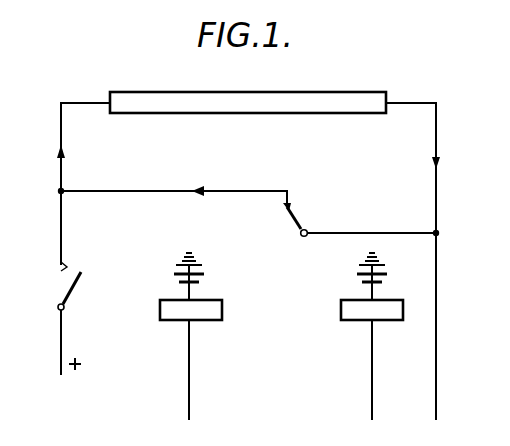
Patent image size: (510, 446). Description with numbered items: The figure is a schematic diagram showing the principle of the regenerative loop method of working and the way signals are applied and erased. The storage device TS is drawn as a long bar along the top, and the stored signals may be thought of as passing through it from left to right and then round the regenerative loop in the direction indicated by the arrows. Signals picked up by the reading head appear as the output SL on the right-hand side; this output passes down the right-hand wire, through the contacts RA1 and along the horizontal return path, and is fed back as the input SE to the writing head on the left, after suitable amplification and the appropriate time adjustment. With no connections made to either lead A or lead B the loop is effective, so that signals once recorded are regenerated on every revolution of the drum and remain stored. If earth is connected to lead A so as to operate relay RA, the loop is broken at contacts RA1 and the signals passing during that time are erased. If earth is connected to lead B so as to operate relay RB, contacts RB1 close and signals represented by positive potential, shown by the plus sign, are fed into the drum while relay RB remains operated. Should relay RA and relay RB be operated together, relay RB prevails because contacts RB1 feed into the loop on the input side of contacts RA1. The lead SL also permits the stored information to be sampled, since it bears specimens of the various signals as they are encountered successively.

The storage device TS is at (248, 90).
The input lead to writing head SE is at (83, 172).
The output lead from reading head SL is at (428, 253).
The contacts of relay RB RB1 is at (46, 318).
The contacts of relay RA RA1 is at (359, 219).
The relay RB is at (209, 289).
The relay RA is at (388, 290).
The lead A is at (385, 371).
The lead B is at (201, 371).